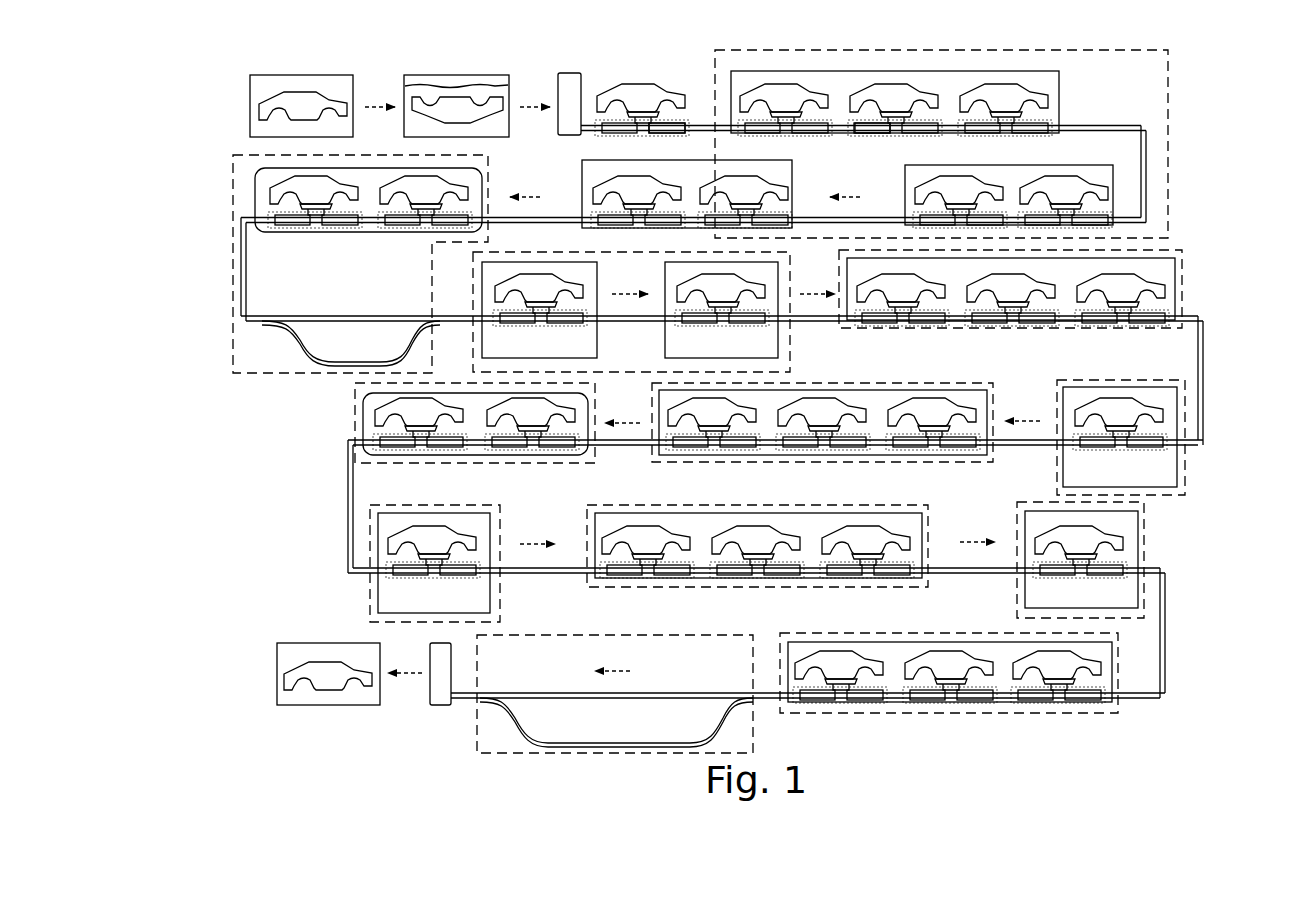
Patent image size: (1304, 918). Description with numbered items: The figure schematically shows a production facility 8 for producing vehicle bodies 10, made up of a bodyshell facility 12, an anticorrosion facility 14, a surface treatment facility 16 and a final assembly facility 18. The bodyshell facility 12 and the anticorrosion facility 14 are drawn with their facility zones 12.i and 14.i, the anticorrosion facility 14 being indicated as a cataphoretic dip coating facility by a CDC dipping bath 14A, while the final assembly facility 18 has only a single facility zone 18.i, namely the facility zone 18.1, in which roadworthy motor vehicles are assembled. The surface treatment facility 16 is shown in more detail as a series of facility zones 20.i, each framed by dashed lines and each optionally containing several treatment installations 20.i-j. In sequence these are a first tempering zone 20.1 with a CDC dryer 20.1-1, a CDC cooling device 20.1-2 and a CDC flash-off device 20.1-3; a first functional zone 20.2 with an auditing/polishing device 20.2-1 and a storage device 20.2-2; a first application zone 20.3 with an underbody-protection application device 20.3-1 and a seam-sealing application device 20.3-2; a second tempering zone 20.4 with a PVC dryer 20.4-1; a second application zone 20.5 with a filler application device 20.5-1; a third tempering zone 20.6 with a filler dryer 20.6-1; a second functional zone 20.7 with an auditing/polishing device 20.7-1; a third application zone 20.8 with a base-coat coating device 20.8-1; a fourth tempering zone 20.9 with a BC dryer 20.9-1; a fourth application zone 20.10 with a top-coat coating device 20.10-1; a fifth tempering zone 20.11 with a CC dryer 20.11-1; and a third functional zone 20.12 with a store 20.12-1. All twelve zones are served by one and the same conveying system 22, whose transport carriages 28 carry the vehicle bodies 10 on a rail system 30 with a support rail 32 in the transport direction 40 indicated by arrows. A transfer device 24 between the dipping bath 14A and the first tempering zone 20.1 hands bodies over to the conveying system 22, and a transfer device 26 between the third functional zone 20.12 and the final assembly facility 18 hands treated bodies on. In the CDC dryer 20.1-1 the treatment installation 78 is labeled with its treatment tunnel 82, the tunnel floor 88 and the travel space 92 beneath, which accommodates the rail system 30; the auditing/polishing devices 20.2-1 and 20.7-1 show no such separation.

The production facility 8 is at (225, 125).
The vehicle body 10 is at (632, 84).
The bodyshell facility 12 is at (288, 75).
The bodyshell facility zone 12.i is at (333, 75).
The anticorrosion facility 14 is at (450, 75).
The CDC dipping bath 14A is at (413, 75).
The anticorrosion-facility zone 14.i is at (484, 75).
The surface treatment facility 16 is at (934, 129).
The final assembly facility 18 is at (277, 675).
The final assembly facility zone 18.i is at (277, 650).
The facility zone of the final assembly facility 18.1 is at (277, 700).
The first tempering zone 20.1 is at (1172, 226).
The CDC dryer 20.1-1 is at (941, 78).
The CDC cooling device 20.1-2 is at (1035, 170).
The CDC flash-off device 20.1-3 is at (775, 165).
The first functional zone 20.2 is at (235, 272).
The auditing/polishing device 20.2-1 is at (252, 185).
The storage device 20.2-2 is at (295, 340).
The first application zone 20.3 is at (795, 327).
The underbody-protection application device 20.3-1 is at (597, 335).
The seam-sealing application device 20.3-2 is at (782, 340).
The second tempering zone 20.4 is at (1189, 302).
The PVC dryer 20.4-1 is at (1183, 272).
The second application zone 20.5 is at (1189, 422).
The filler application device 20.5-1 is at (1183, 400).
The third tempering zone 20.6 is at (847, 465).
The filler dryer 20.6-1 is at (728, 455).
The second functional zone 20.7 is at (353, 440).
The auditing/polishing device 20.7-1 is at (358, 415).
The third application zone 20.8 is at (368, 612).
The base-coat (BC) coating device 20.8-1 is at (380, 545).
The fourth tempering zone 20.9 is at (685, 592).
The BC dryer 20.9-1 is at (843, 580).
The fourth application zone 20.10 is at (1147, 588).
The top-coat (CC) coating device 20.10-1 is at (1145, 552).
The fifth tempering zone 20.11 is at (1122, 705).
The CC dryer 20.11-1 is at (1115, 670).
The third functional zone 20.12 is at (759, 722).
The store 20.12-1 is at (520, 735).
The facility zone 20.i is at (322, 455).
The treatment installation 20.i-j is at (330, 485).
The conveying system 22 is at (1060, 123).
The transfer device 24 is at (572, 73).
The transfer device 26 is at (430, 688).
The transport carriage 28 is at (668, 120).
The rail system 30 is at (1152, 130).
The support rail 32 is at (1147, 160).
The transport direction 40 is at (378, 295).
The treatment installation 78 is at (816, 68).
The treatment tunnel 82 is at (937, 82).
The tunnel floor 88 is at (835, 120).
The travel space 92 is at (950, 120).